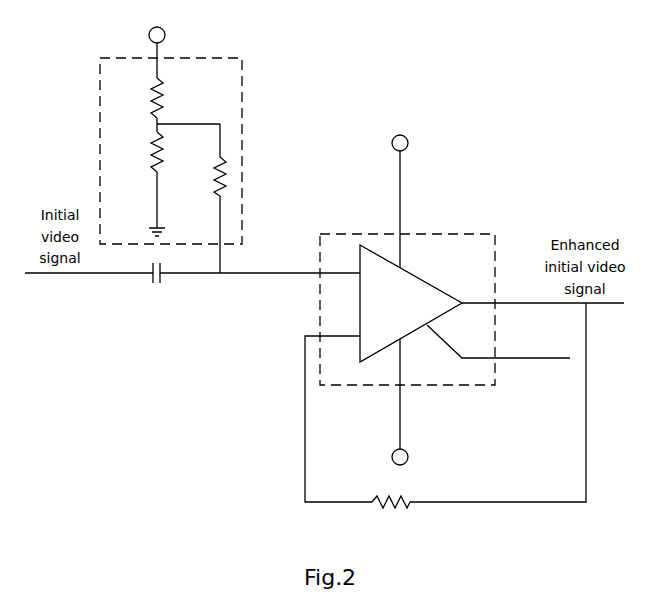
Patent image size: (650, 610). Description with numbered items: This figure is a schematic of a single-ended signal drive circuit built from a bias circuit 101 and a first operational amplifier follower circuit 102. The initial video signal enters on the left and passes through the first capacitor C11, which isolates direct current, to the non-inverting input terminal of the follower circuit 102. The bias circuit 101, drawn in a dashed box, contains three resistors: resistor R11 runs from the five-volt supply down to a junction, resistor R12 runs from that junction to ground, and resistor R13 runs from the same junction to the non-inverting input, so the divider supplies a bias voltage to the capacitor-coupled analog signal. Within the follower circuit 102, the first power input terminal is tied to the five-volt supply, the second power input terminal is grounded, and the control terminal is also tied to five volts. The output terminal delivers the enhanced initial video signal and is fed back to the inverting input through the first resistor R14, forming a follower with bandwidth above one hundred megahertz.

The bias circuit 101 is at (213, 150).
The first operational amplifier follower circuit 102 is at (450, 233).
The resistor R11 is at (135, 98).
The resistor R12 is at (135, 152).
The resistor R13 is at (296, 207).
The first resistor R14 is at (391, 516).
The first capacitor C11 is at (153, 284).